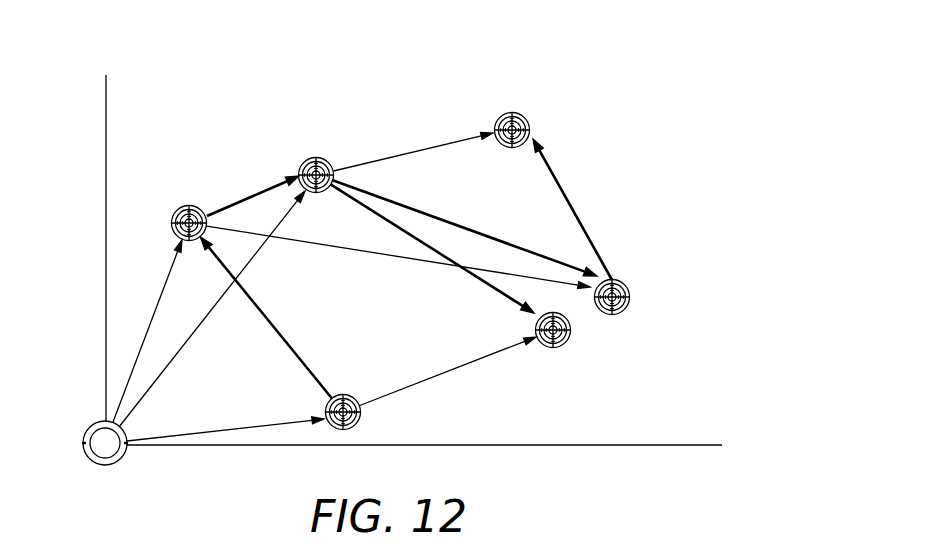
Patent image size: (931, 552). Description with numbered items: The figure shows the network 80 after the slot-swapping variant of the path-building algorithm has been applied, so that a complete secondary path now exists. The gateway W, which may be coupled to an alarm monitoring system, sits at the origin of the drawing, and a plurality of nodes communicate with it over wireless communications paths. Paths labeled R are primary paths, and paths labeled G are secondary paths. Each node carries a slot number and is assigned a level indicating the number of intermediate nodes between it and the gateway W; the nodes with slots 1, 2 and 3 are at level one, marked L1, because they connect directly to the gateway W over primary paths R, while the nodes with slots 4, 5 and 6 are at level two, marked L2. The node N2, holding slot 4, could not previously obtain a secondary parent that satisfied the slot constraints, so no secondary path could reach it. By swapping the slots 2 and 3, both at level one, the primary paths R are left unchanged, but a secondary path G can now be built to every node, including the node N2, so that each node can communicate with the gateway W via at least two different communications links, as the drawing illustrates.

The network 80 is at (730, 44).
The gateway W is at (108, 440).
The node N2 is at (625, 310).
The slot 1 is at (363, 415).
The slot 2 is at (179, 202).
The slot 3 is at (306, 153).
The slot 4 is at (640, 283).
The slot 5 is at (544, 349).
The slot 6 is at (502, 106).
The level one L1 is at (317, 281).
The level two L2 is at (604, 232).
The primary path R is at (160, 293).
The secondary path G is at (252, 198).